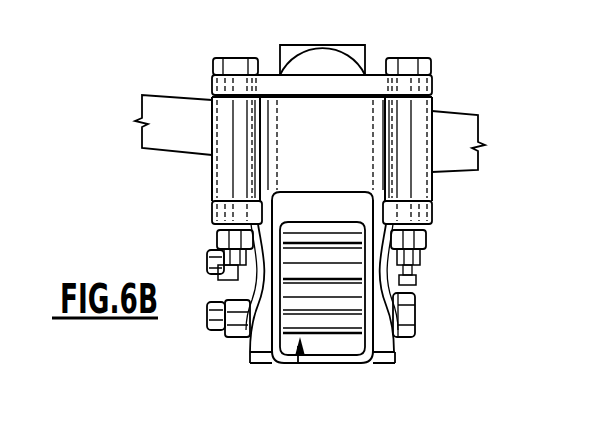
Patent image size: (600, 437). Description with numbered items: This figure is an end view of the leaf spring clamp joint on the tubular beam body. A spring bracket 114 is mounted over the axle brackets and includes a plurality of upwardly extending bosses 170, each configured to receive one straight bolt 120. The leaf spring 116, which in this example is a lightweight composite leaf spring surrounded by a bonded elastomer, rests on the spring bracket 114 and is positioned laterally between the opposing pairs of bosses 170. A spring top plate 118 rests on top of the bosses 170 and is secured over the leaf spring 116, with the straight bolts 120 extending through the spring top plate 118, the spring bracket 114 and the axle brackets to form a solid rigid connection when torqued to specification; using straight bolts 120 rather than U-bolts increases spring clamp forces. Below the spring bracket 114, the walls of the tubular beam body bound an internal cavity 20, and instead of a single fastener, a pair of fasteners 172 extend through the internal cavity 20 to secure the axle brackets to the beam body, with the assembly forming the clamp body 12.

The clamp body / frame 12 is at (353, 365).
The internal cavity 20 is at (298, 362).
The spring bracket 114 is at (339, 162).
The leaf spring 116 is at (168, 137).
The spring top plate 118 is at (352, 93).
The straight bolt 120 is at (236, 63).
The boss 170 is at (216, 166).
The fastener 172 is at (355, 310).